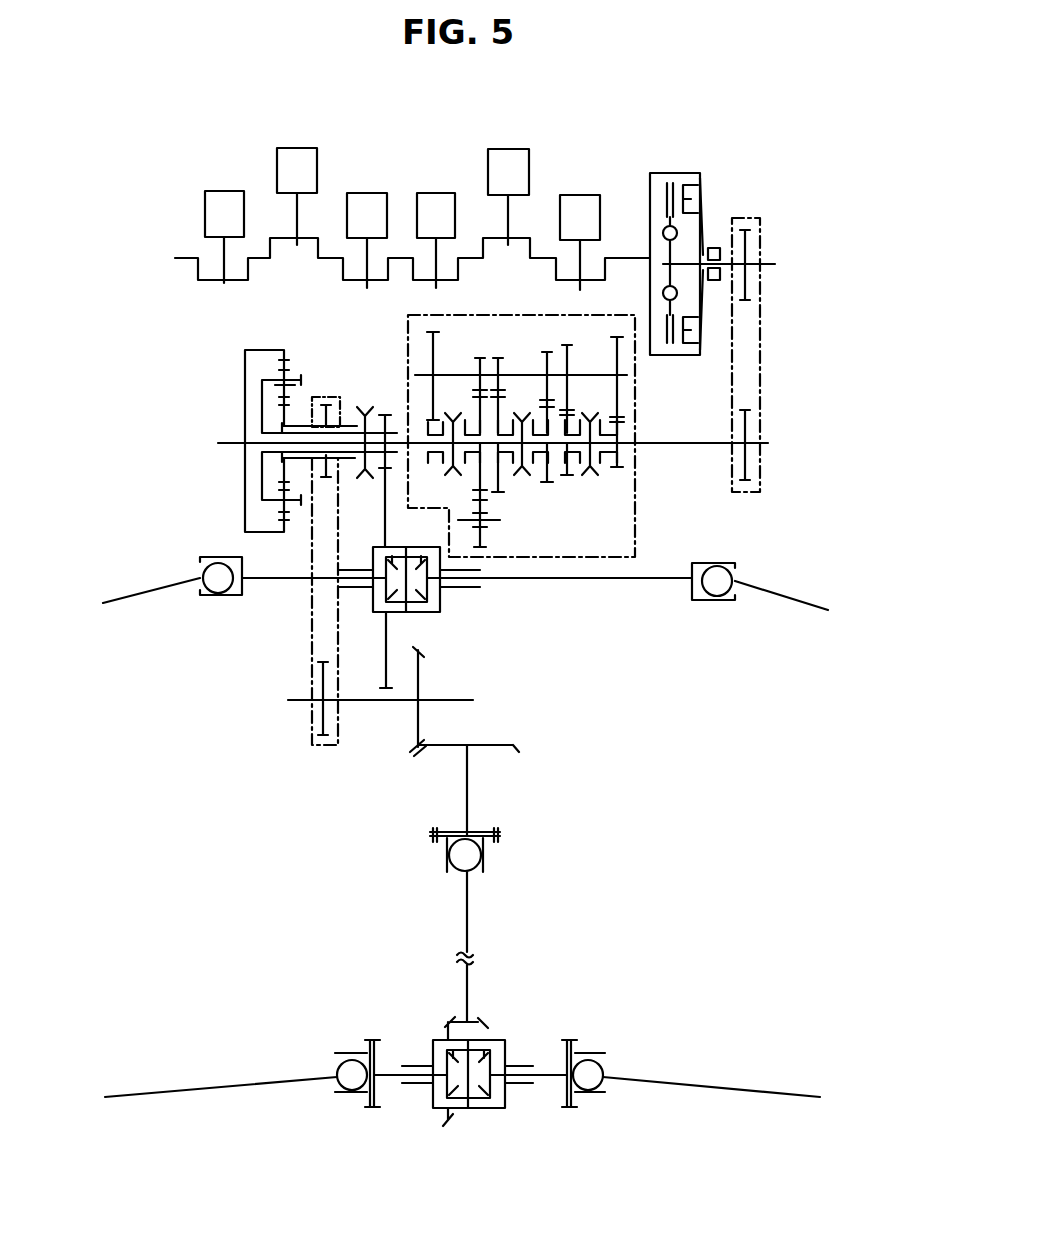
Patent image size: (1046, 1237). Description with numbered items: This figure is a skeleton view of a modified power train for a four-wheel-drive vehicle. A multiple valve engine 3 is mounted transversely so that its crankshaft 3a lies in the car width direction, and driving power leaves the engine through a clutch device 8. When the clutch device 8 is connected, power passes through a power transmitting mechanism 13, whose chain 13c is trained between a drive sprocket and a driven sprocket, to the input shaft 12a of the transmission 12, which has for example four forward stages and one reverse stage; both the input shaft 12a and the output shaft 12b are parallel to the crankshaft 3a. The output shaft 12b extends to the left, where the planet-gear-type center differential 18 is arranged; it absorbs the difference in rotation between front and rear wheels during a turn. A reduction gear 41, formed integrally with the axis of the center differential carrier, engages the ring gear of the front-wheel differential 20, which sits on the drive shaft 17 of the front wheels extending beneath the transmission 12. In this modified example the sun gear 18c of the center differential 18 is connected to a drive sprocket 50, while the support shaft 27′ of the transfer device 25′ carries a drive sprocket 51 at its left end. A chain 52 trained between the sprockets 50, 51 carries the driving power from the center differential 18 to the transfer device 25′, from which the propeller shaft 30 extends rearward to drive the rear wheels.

The multiple valve engine 3 is at (412, 202).
The crankshaft 3a is at (343, 272).
The clutch device 8 is at (715, 167).
The power transmitting mechanism 13 is at (789, 355).
The chain 13c is at (760, 360).
The transmission 12 is at (493, 432).
The input shaft 12a is at (682, 446).
The output shaft 12b is at (411, 440).
The center differential 18 is at (272, 441).
The sun gear 18c is at (287, 460).
The reduction gear 41 is at (378, 422).
The chain 52 is at (308, 593).
The drive sprocket 50 is at (327, 470).
The differential for the front wheels 20 is at (449, 621).
The drive shaft 17 is at (590, 594).
The drive sprocket 51 is at (323, 683).
The support shaft 27′ is at (376, 702).
The transfer device 25′ is at (534, 743).
The propeller shaft 30 is at (466, 915).